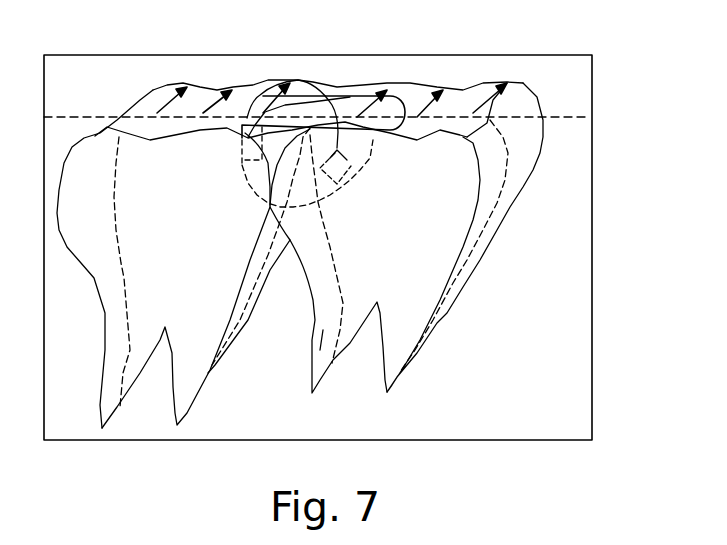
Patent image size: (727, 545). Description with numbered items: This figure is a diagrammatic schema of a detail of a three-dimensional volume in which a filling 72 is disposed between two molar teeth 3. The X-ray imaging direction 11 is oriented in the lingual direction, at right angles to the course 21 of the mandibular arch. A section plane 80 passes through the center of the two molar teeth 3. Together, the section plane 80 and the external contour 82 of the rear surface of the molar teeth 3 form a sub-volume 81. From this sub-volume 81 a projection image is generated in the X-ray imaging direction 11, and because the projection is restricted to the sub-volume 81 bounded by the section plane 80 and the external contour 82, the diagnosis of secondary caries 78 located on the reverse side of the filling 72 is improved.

The molar teeth 3 is at (200, 347).
The X-ray imaging direction 11 is at (157, 92).
The course of the mandibular arch 21 is at (567, 117).
The filling 72 is at (393, 102).
The secondary caries 78 is at (336, 130).
The section plane 80 is at (585, 350).
The sub-volume 81 is at (331, 137).
The external contour 82 is at (525, 140).